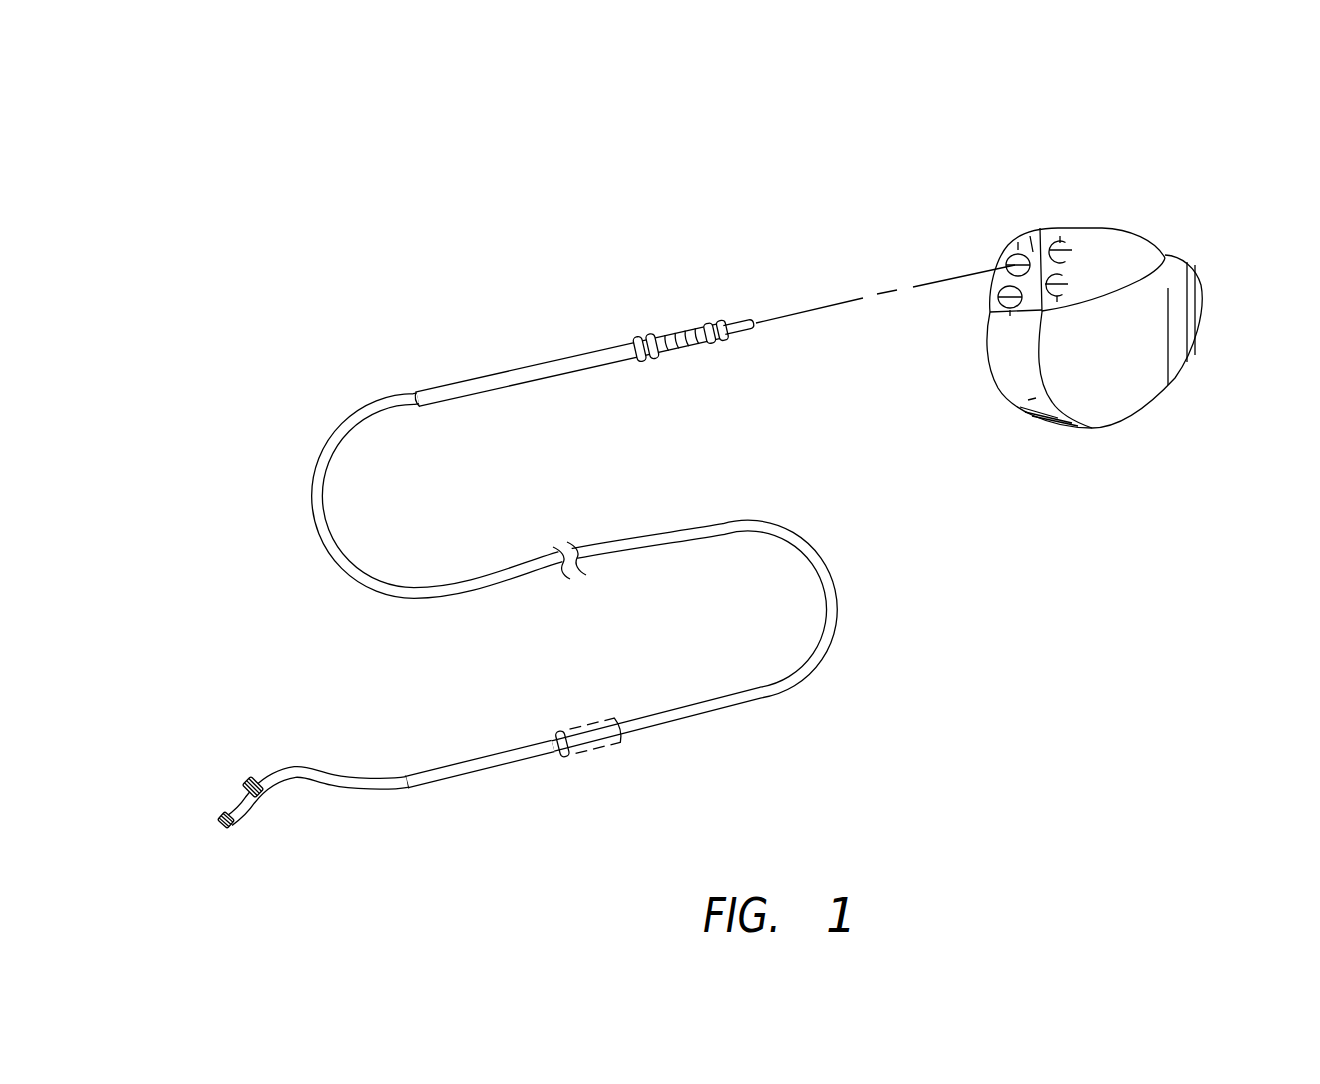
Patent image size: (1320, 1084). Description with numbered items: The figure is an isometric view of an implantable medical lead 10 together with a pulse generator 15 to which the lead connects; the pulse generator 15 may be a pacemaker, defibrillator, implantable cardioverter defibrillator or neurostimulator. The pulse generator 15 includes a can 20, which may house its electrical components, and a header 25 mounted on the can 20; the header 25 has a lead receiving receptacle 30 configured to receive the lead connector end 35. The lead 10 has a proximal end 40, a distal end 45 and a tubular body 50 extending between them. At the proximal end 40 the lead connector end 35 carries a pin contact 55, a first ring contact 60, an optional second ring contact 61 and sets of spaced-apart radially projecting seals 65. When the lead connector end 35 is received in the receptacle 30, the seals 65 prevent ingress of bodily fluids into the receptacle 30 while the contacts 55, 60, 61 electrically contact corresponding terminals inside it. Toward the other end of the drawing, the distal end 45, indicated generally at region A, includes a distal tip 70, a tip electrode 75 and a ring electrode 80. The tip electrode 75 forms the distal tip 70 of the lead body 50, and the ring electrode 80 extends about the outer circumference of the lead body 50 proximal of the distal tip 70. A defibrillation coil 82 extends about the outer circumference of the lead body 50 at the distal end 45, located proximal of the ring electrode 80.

The implantable medical lead 10 is at (600, 533).
The pulse generator 15 is at (1210, 162).
The can 20 is at (1185, 256).
The header 25 is at (1115, 232).
The lead receiving receptacle 30 is at (1041, 228).
The lead connector end 35 is at (733, 303).
The proximal end 40 is at (815, 222).
The distal end 45 is at (312, 821).
The tubular body 50 is at (829, 630).
The pin contact 55 is at (745, 330).
The first ring contact 60 is at (683, 347).
The second ring contact 61 is at (665, 355).
The seals 65 is at (722, 340).
The distal tip 70 is at (220, 828).
The tip electrode 75 is at (235, 826).
The ring electrode 80 is at (250, 778).
The defibrillation coil 82 is at (587, 750).
The distal region A is at (207, 773).